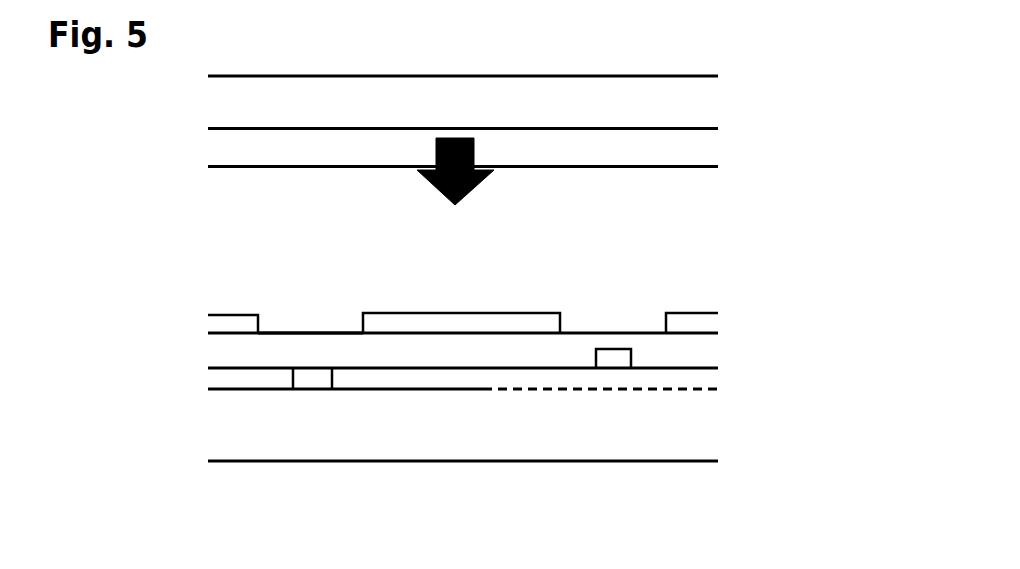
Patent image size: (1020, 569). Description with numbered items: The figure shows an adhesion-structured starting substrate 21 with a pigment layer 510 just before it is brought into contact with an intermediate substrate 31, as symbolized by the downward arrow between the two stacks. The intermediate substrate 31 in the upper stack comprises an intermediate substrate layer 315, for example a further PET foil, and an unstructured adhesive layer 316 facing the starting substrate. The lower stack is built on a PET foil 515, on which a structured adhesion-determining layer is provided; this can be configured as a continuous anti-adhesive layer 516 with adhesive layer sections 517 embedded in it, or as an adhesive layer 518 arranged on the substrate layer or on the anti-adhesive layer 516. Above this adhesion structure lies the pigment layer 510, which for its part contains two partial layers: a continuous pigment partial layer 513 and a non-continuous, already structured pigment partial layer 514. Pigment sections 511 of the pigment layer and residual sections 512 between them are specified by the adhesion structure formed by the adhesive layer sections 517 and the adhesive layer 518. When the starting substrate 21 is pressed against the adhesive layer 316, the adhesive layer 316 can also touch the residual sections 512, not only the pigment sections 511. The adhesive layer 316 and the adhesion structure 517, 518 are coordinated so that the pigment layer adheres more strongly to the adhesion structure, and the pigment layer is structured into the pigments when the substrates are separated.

The intermediate substrate 31 is at (484, 135).
The intermediate substrate layer 315 is at (718, 99).
The adhesive layer 316 is at (721, 148).
The pigment layer 510 is at (206, 333).
The pigment sections 511 is at (446, 305).
The residual sections 512 is at (315, 325).
The continuous pigment partial layer 513 is at (706, 351).
The non-continuous pigment partial layer 514 is at (709, 323).
The PET foil 515 is at (220, 424).
The anti-adhesive layer 516 is at (220, 380).
The adhesive layer sections 517 is at (313, 382).
The adhesive layer 518 is at (612, 347).
The starting substrate 21 is at (262, 480).